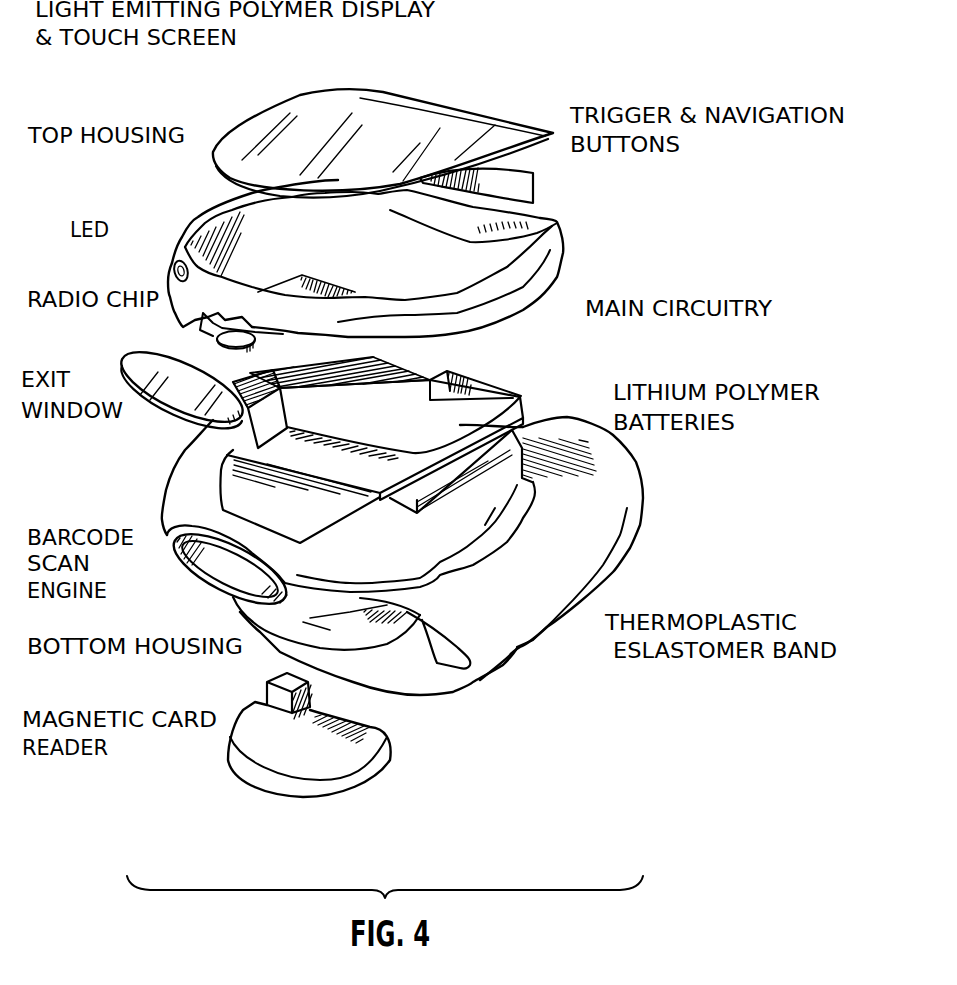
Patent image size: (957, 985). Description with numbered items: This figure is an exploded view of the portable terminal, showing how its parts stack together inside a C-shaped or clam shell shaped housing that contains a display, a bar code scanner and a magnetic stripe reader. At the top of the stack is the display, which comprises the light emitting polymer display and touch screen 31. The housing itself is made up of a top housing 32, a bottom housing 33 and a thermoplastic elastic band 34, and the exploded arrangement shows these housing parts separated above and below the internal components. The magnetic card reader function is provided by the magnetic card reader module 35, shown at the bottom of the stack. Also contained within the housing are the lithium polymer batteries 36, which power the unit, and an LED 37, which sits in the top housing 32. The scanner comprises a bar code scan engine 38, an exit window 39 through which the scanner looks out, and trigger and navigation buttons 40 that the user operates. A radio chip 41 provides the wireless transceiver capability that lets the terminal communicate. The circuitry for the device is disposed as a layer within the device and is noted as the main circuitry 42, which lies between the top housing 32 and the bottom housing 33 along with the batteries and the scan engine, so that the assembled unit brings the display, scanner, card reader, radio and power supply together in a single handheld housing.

The light emitting polymer display and touch screen 31 is at (247, 117).
The top housing 32 is at (173, 232).
The bottom housing 33 is at (189, 571).
The thermoplastic elastic band 34 is at (598, 590).
The magnetic card reader module 35 is at (266, 687).
The lithium polymer batteries 36 is at (600, 428).
The LED 37 is at (177, 266).
The bar code scan engine 38 is at (211, 446).
The exit window 39 is at (154, 407).
The trigger and navigation buttons 40 is at (533, 187).
The radio chip 41 is at (221, 357).
The circuitry 42 is at (517, 370).